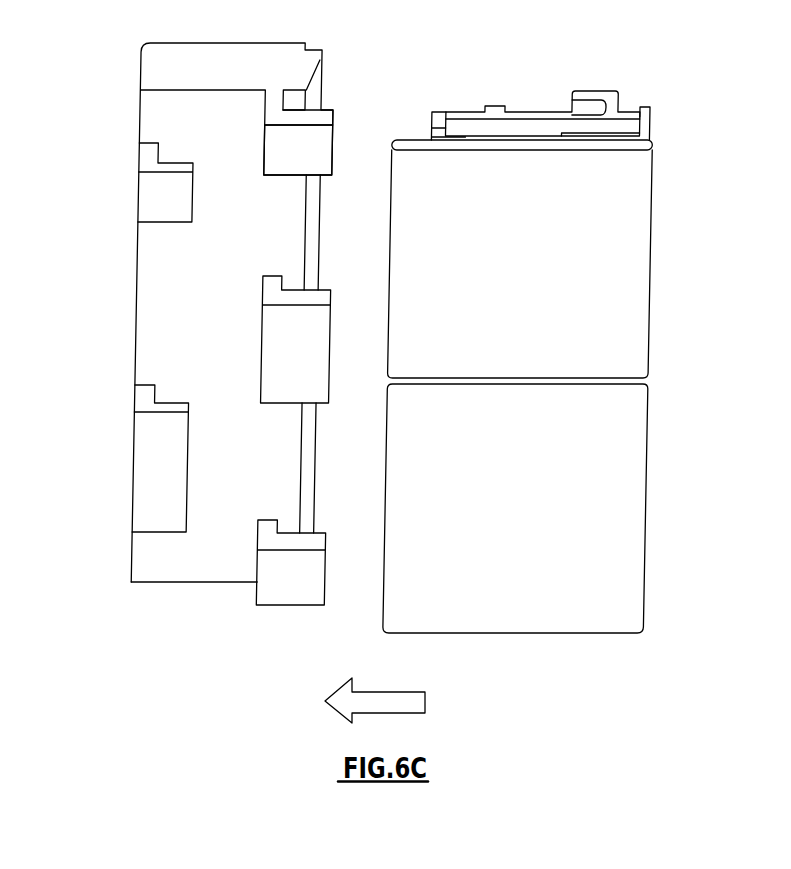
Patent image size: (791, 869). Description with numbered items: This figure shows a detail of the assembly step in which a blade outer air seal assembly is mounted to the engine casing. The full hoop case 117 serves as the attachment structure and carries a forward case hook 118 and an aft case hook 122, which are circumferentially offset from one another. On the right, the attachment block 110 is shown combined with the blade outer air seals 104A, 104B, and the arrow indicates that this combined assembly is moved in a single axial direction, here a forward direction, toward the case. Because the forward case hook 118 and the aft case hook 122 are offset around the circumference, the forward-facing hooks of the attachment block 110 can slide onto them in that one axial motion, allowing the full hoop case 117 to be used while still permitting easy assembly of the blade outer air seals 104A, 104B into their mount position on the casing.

The full hoop case 117 is at (282, 58).
The forward case hook 118 is at (152, 196).
The aft case hook 122 is at (327, 145).
The attachment block 110 is at (613, 112).
The blade outer air seal 104A is at (633, 257).
The blade outer air seal 104B is at (623, 513).